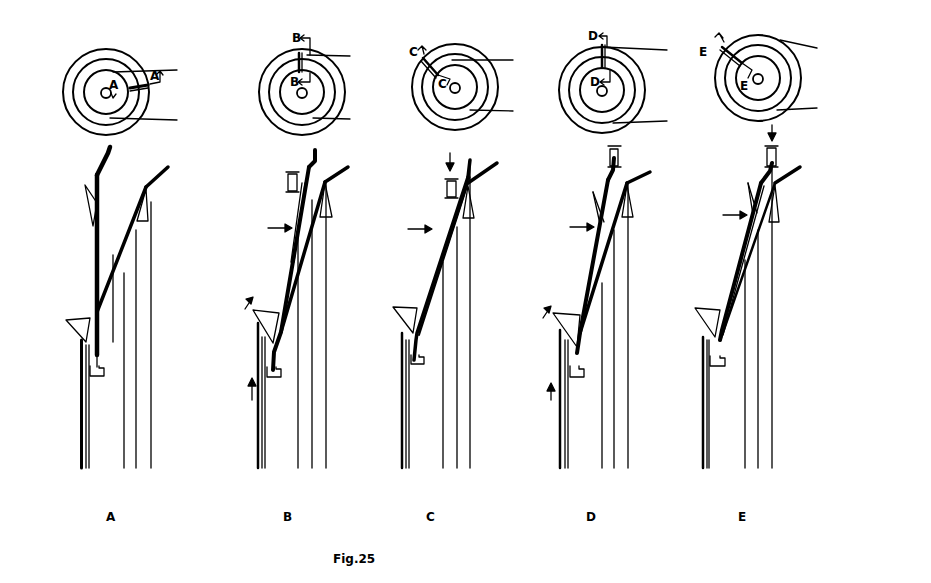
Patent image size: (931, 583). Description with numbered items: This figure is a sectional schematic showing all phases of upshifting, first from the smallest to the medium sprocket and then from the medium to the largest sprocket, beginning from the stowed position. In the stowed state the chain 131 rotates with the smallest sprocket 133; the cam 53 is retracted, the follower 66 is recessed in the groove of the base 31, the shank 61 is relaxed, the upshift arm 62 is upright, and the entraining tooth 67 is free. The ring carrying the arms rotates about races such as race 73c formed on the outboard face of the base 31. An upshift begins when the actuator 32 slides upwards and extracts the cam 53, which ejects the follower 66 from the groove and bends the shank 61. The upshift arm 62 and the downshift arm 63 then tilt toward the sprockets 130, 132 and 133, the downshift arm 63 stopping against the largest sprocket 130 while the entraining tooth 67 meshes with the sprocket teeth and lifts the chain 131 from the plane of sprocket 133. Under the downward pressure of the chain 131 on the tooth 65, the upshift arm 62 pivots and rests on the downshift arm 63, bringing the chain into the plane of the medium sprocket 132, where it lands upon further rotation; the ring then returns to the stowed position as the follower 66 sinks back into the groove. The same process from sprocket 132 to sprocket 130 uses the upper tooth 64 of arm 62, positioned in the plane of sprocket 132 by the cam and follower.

The base 31 is at (88, 443).
The actuator 32 is at (80, 412).
The cam 53 is at (80, 347).
The shank 61 is at (101, 352).
The upshift arm 62 is at (97, 255).
The downshift arm 63 is at (124, 232).
The upper tooth 64 is at (112, 150).
The tooth 65 is at (88, 195).
The follower 66 is at (83, 318).
The entraining tooth 67 is at (143, 191).
The race 73c is at (98, 378).
The sprocket 130 is at (151, 468).
The chain 131 is at (288, 178).
The sprocket 132 is at (136, 468).
The sprocket 133 is at (124, 468).